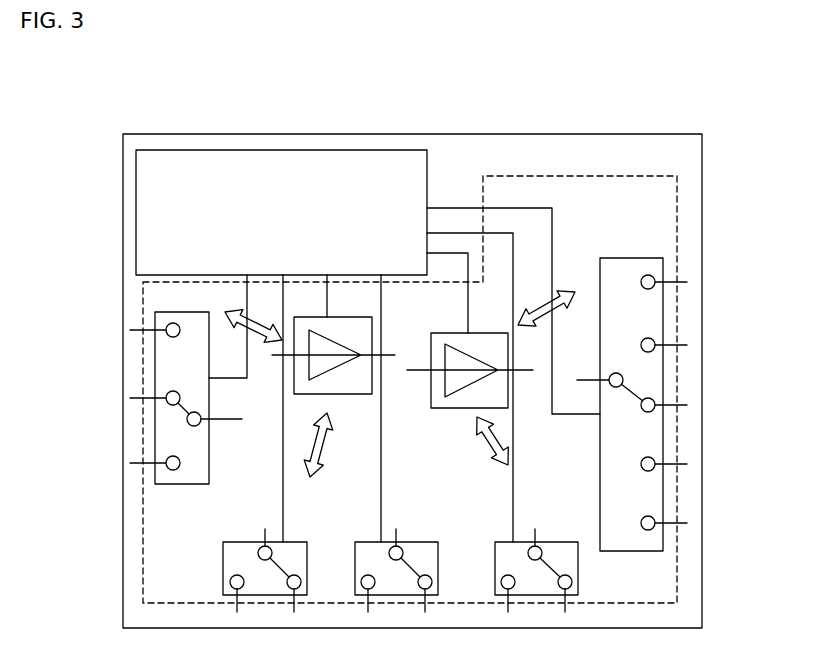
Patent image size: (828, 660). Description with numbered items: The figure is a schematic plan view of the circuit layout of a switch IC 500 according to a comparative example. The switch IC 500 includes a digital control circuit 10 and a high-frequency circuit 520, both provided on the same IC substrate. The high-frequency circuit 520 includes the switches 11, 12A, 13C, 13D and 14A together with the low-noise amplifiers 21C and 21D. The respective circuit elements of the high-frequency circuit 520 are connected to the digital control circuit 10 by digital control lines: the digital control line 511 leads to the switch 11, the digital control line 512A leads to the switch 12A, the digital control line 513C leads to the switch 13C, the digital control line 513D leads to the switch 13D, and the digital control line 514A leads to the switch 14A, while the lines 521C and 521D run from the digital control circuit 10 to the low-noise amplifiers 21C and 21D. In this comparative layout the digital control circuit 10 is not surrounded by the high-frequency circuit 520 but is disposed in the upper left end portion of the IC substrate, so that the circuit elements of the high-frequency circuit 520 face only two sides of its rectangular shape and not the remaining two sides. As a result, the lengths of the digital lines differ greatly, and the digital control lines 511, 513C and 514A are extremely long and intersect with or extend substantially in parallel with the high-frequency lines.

The switch IC 500 is at (662, 134).
The high-frequency circuit 520 is at (497, 176).
The digital control circuit 10 is at (427, 180).
The digital control line 512A is at (552, 238).
The switch 12A is at (610, 258).
The switch 13D is at (168, 312).
The control line 521C is at (327, 300).
The control line 521D is at (468, 308).
The digital control line 513D is at (247, 365).
The low-noise amplifier 21C is at (340, 394).
The low-noise amplifier 21D is at (458, 408).
The digital control line 511 is at (283, 500).
The switch 11 is at (240, 542).
The digital control line 513C is at (381, 500).
The switch 13C is at (415, 542).
The digital control line 514A is at (513, 500).
The switch 14A is at (548, 542).